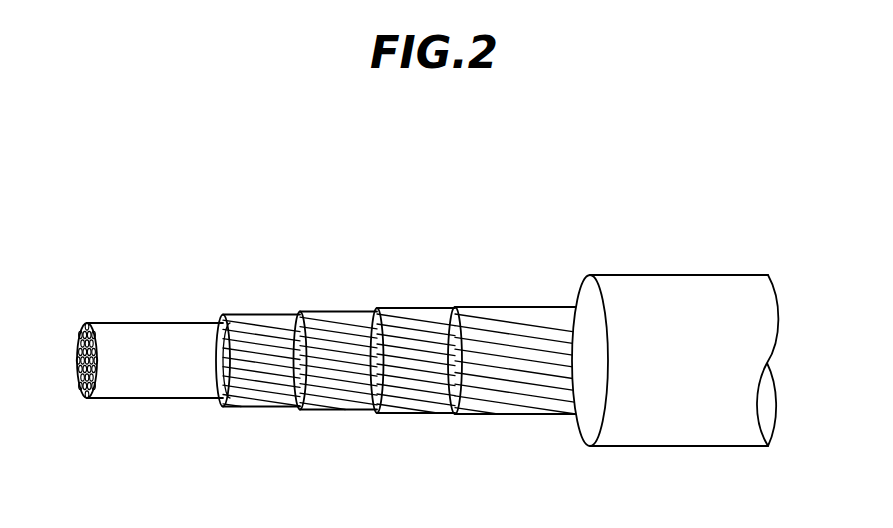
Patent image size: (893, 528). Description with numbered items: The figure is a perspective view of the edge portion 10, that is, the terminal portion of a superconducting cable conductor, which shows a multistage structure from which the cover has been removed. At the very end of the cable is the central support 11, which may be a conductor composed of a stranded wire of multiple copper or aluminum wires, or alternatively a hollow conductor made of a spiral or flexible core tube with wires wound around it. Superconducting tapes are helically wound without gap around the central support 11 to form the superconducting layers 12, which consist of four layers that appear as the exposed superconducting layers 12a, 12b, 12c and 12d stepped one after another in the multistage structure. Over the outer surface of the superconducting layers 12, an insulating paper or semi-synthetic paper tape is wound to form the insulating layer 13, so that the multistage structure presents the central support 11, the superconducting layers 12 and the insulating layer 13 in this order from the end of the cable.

The edge portion 10 is at (551, 237).
The central support 11 is at (207, 327).
The superconducting layers 12 is at (467, 203).
The exposed superconducting layer 12a is at (275, 313).
The exposed superconducting layer 12b is at (343, 313).
The exposed superconducting layer 12c is at (413, 318).
The exposed superconducting layer 12d is at (480, 318).
The insulating layer 13 is at (690, 297).